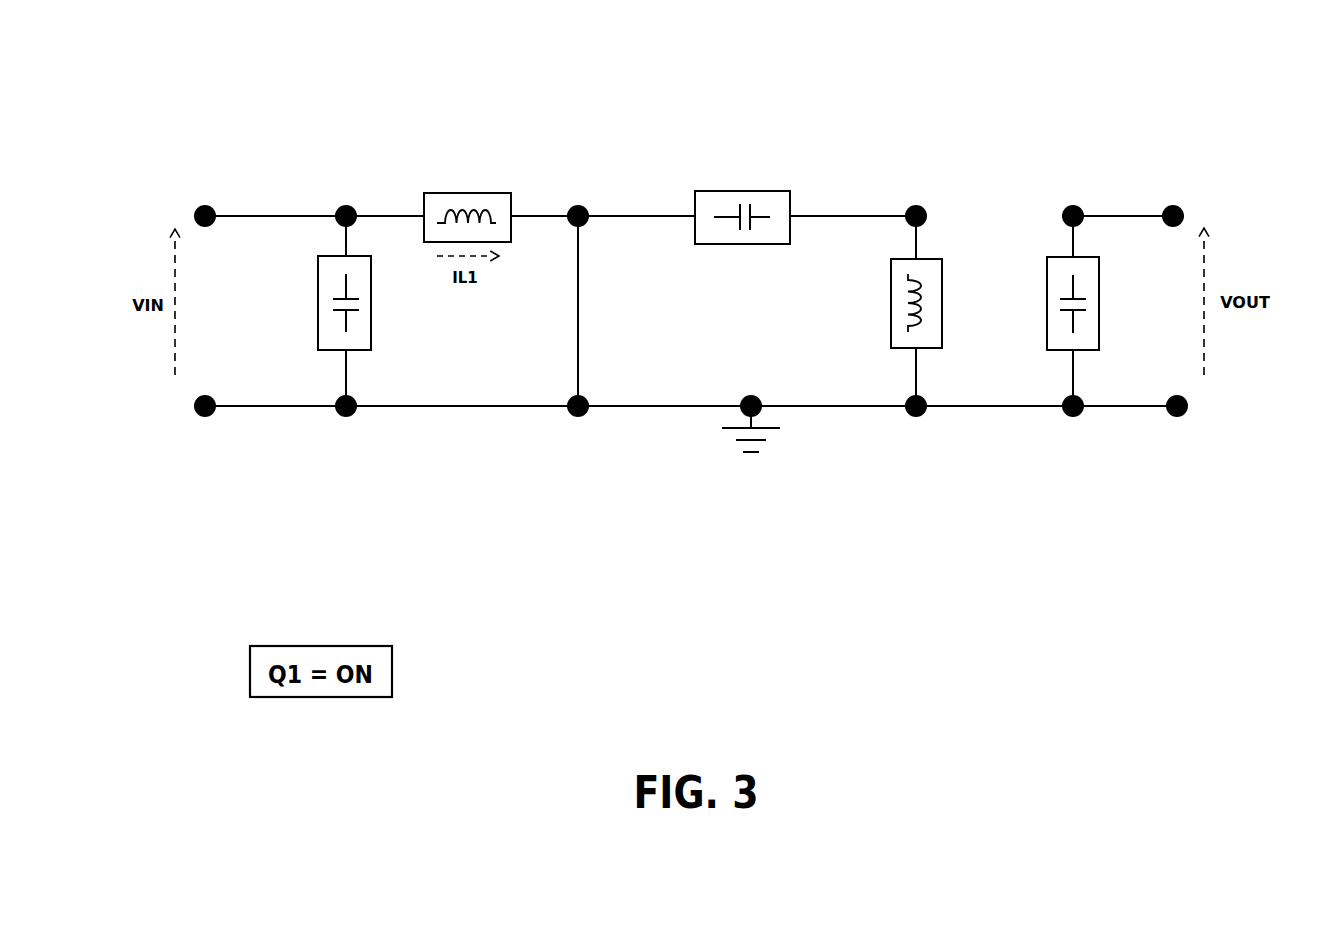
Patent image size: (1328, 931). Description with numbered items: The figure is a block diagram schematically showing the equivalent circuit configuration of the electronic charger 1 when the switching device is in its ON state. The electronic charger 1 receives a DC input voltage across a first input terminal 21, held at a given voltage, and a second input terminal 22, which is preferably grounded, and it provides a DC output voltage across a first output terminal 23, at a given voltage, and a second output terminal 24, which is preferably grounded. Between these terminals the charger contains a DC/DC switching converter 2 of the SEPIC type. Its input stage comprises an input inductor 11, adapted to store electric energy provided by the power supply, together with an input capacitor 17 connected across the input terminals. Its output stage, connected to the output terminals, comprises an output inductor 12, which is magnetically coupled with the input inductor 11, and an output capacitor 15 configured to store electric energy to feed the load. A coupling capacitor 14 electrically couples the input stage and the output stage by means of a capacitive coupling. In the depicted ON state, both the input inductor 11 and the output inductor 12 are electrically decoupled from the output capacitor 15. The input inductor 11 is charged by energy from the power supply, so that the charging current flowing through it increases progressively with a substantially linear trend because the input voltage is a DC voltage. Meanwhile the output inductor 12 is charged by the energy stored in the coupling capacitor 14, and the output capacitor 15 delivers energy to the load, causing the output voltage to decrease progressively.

The electronic charger 1 is at (1029, 90).
The DC/DC switching converter 2 is at (733, 517).
The input inductor 11 is at (460, 193).
The output inductor 12 is at (942, 325).
The coupling capacitor 14 is at (740, 191).
The output capacitor 15 is at (1099, 268).
The input capacitor 17 is at (318, 274).
The first input terminal 21 is at (196, 181).
The second input terminal 22 is at (201, 434).
The first output terminal 23 is at (1177, 180).
The second output terminal 24 is at (1175, 427).